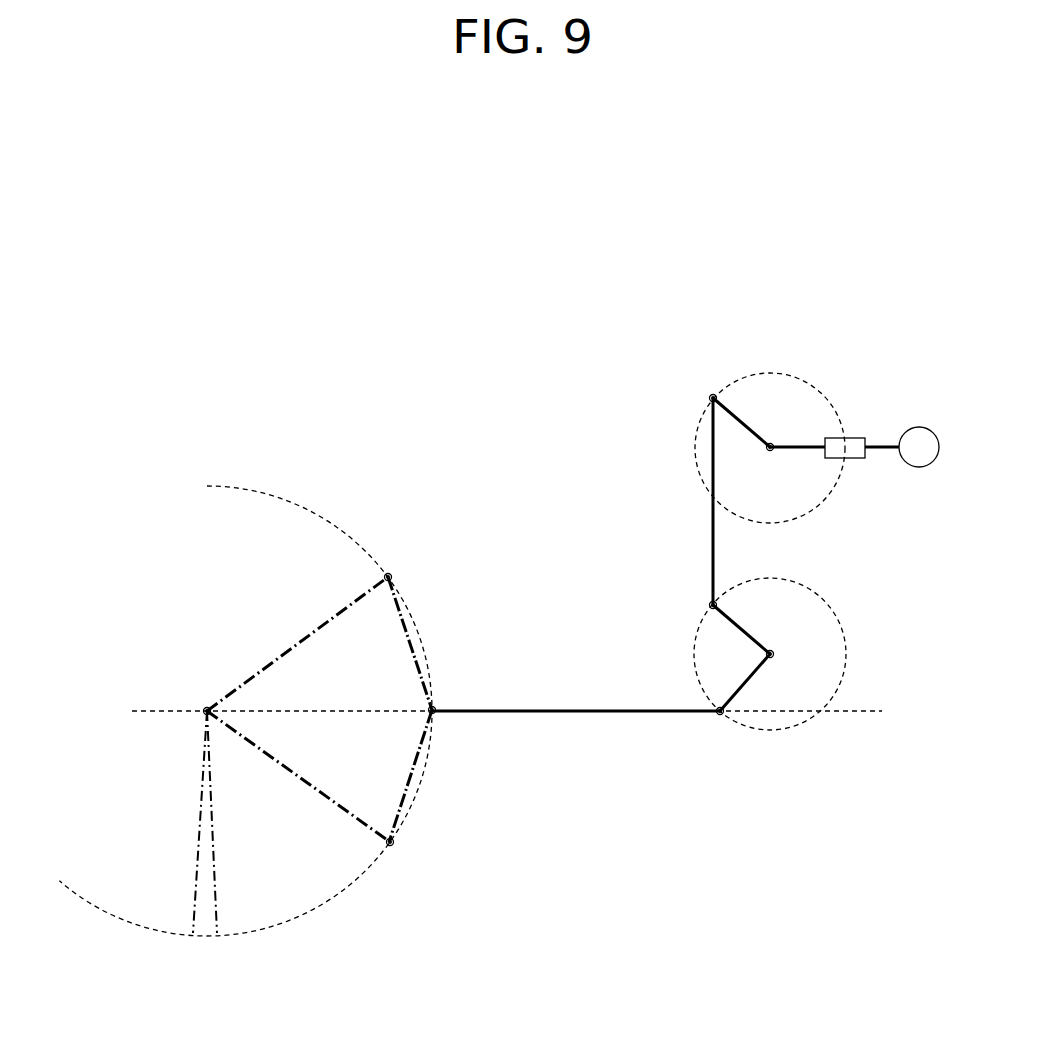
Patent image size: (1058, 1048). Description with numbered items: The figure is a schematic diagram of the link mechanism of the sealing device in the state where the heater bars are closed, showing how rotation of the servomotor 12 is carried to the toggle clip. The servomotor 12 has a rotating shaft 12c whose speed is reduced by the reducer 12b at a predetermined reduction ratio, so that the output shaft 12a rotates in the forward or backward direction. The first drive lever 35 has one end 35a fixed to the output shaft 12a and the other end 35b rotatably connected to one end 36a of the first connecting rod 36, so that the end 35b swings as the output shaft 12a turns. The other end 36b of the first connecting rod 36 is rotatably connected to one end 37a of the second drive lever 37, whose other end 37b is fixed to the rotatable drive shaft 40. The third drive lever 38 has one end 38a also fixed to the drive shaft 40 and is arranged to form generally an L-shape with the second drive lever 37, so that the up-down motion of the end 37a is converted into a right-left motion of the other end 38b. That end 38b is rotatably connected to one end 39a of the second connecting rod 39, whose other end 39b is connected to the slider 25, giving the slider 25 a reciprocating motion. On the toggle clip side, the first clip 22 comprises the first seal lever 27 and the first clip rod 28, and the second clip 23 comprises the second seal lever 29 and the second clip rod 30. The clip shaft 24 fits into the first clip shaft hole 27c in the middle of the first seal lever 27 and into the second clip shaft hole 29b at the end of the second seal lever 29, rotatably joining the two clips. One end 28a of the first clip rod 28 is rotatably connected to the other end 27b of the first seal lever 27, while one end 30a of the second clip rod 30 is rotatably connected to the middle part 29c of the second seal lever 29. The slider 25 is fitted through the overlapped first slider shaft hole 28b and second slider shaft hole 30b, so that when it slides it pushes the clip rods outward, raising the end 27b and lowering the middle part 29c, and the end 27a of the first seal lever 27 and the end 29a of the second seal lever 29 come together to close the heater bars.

The servomotor 12 is at (920, 468).
The output shaft 12a is at (800, 446).
The reducer 12b is at (852, 459).
The rotating shaft 12c is at (884, 446).
The first clip 22 is at (347, 628).
The second clip 23 is at (350, 778).
The clip shaft 24 is at (145, 677).
The slider 25 is at (514, 739).
The first seal lever 27 is at (305, 632).
The one end of first seal lever 27a is at (190, 920).
The other end of first seal lever 27b is at (145, 677).
The first clip shaft hole 27c is at (413, 553).
The first clip rod 28 is at (423, 636).
The one end of first clip rod 28a is at (389, 576).
The first slider shaft hole 28b is at (514, 739).
The second seal lever 29 is at (315, 784).
The one end of second seal lever 29a is at (220, 920).
The second clip shaft hole 29b is at (447, 872).
The middle part of second seal lever 29c is at (207, 710).
The second clip rod 30 is at (413, 771).
The one end of second clip rod 30a is at (392, 843).
The second slider shaft hole 30b is at (514, 739).
The first drive lever 35 is at (750, 422).
The one end of first drive lever 35a is at (771, 449).
The other end of first drive lever 35b is at (669, 379).
The first connecting rod 36 is at (713, 530).
The one end of first connecting rod 36a is at (713, 398).
The other end of first connecting rod 36b is at (656, 620).
The second drive lever 37 is at (748, 628).
The one end of second drive lever 37a is at (713, 605).
The other end of second drive lever 37b is at (850, 620).
The third drive lever 38 is at (748, 682).
The one end of third drive lever 38a is at (771, 654).
The other end of third drive lever 38b is at (714, 740).
The second connecting rod 39 is at (577, 710).
The one end of second connecting rod 39a is at (720, 713).
The other end of second connecting rod 39b is at (433, 712).
The drive shaft 40 is at (850, 620).